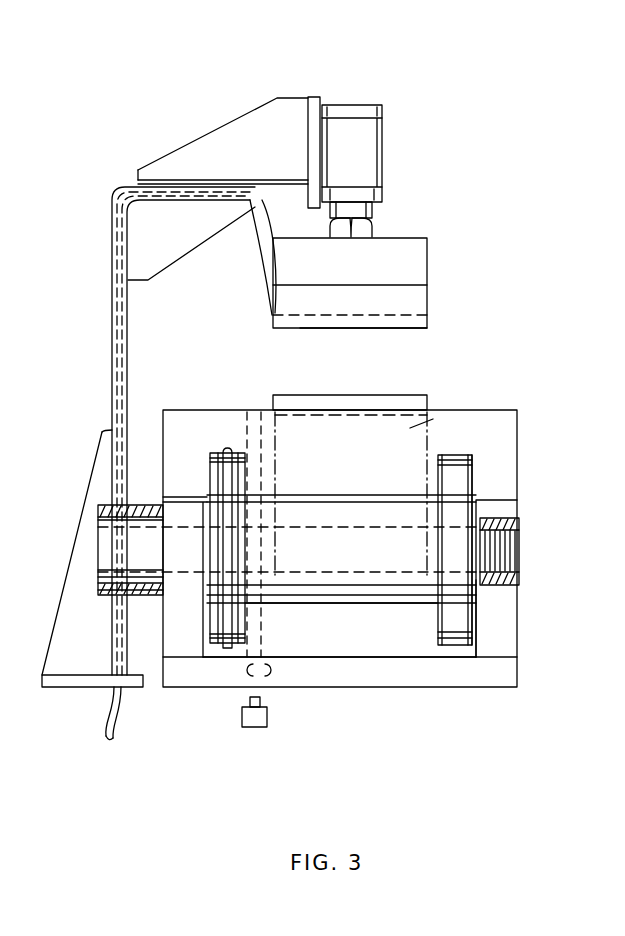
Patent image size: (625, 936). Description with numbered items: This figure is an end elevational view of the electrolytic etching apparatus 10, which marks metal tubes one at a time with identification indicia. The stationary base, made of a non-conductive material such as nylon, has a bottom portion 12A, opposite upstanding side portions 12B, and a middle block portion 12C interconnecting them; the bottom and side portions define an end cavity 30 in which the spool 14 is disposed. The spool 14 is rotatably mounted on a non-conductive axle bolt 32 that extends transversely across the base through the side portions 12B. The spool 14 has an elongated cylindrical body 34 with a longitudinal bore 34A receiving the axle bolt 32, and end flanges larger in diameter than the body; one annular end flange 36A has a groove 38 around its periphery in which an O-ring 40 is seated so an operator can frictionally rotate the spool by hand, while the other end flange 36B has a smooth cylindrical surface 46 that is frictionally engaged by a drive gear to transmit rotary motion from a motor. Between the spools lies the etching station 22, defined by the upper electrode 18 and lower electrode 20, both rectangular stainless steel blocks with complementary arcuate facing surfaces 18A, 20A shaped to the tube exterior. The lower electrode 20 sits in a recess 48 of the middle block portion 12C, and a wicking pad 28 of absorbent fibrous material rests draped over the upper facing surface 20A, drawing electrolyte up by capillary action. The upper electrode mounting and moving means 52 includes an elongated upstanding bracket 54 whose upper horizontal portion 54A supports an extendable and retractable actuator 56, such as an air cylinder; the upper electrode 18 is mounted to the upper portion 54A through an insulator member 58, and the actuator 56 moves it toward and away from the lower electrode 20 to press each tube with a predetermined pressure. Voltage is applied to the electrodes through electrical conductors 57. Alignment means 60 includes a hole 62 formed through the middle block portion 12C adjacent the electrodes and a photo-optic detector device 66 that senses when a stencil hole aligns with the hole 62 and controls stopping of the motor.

The electrolytic etching apparatus 10 is at (398, 68).
The upper horizontal portion of the bracket 54A is at (200, 186).
The actuator 56 is at (383, 130).
The upper electrode mounting and moving means 52 is at (405, 182).
The electrical conductors 57 is at (262, 267).
The insulator member 58 is at (427, 263).
The upper electrode 18 is at (427, 303).
The lower arcuate facing surface of the upper electrode 18A is at (378, 330).
The etching station 22 is at (480, 373).
The bracket 54 is at (112, 356).
The one annular end flange 36A is at (208, 463).
The O-ring 40 is at (228, 448).
The wicking pad 28 is at (302, 395).
The upper arcuate facing surface of the lower electrode 20A is at (370, 413).
The longitudinal bore 34A is at (298, 500).
The cylindrical body 34 is at (346, 493).
The spool 14 is at (387, 495).
The lower electrode 20 is at (400, 417).
The recess 48 is at (410, 430).
The middle block portion 12C is at (518, 472).
The axle bolt 32 is at (190, 528).
The smooth cylindrical surface 46 is at (462, 608).
The upstanding side portion 12B is at (518, 657).
The groove 38 is at (248, 617).
The hole 62 is at (266, 668).
The detector device 66 is at (268, 715).
The end cavity 30 is at (358, 650).
The bottom portion 12A is at (432, 688).
The other end flange 36B is at (478, 628).
The alignment means 60 is at (240, 703).